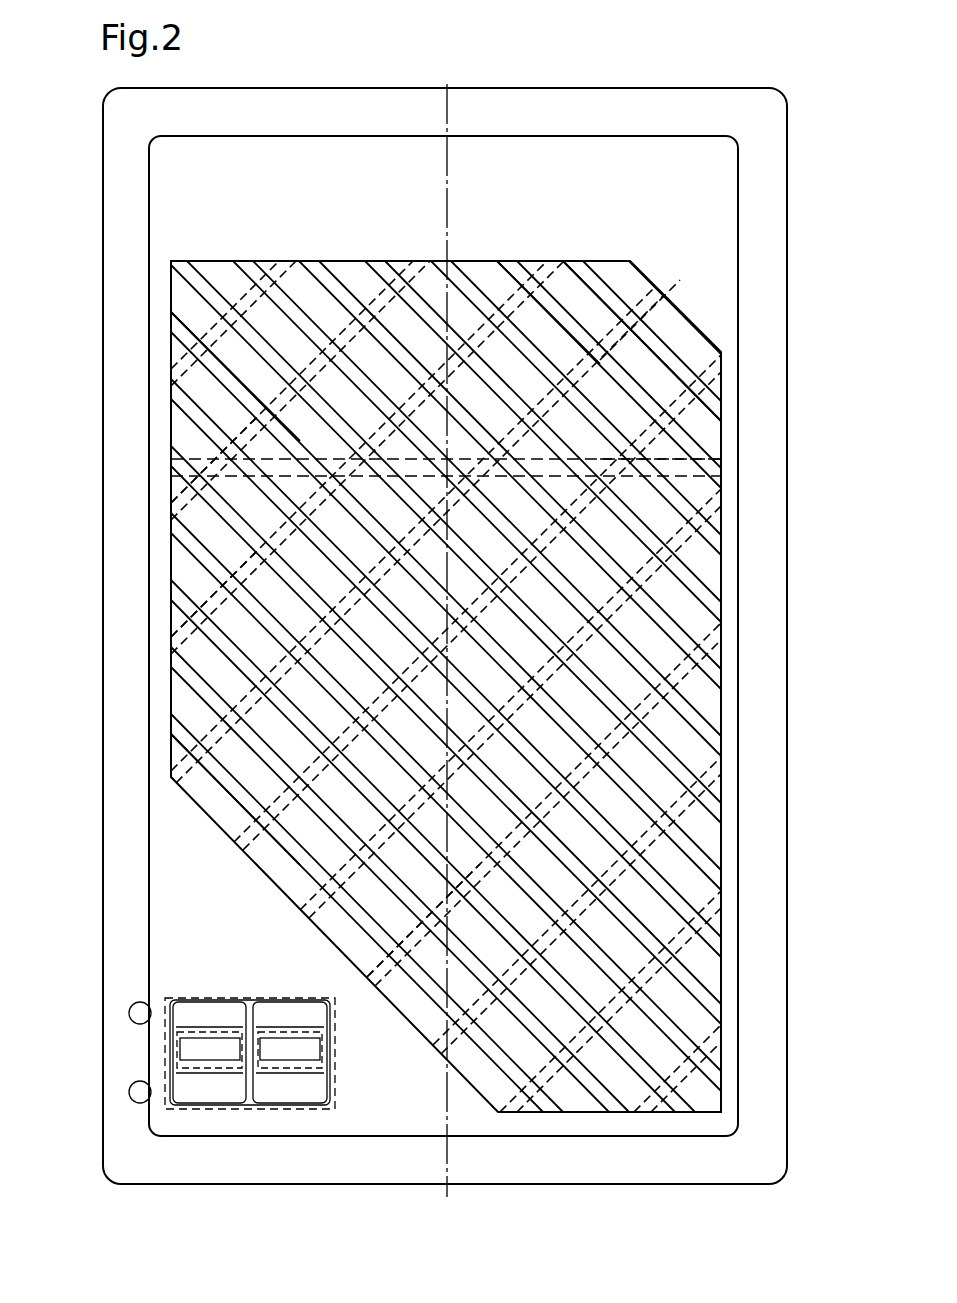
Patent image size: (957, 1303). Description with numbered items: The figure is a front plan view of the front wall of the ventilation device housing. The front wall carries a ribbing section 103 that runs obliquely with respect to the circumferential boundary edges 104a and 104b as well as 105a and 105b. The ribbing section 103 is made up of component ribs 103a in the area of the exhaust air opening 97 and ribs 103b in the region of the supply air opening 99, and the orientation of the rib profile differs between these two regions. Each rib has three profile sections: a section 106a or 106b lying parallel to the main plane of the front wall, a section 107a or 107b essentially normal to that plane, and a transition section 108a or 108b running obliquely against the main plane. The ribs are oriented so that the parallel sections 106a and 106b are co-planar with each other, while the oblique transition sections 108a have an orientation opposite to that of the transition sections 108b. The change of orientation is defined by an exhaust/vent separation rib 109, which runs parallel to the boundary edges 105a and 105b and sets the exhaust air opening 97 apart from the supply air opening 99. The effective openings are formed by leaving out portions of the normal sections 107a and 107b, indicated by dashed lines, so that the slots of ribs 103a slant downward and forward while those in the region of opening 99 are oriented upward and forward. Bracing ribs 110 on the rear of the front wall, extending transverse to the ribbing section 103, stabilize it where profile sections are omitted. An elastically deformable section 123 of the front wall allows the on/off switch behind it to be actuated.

The exhaust air opening 97 is at (500, 622).
The supply air opening 99 is at (388, 372).
The ribbing section 103 is at (207, 498).
The ribs in the exhaust air opening region 103a is at (268, 778).
The ribs in the supply air opening region 103b is at (550, 334).
The circumferential boundary edge 104a is at (100, 270).
The circumferential boundary edge 104b is at (787, 790).
The boundary edge 105a is at (490, 89).
The boundary edge 105b is at (320, 1185).
The profile section parallel to the main plane 106a is at (177, 595).
The profile section parallel to the main plane 106b is at (188, 408).
The profile section normal to the main plane 107a is at (665, 1028).
The profile section normal to the main plane 107b is at (655, 338).
The transition section 108a is at (183, 687).
The transition section 108b is at (183, 440).
The exhaust/vent separation rib 109 is at (700, 462).
The bracing ribs 110 is at (678, 413).
The elastically deformable section 123 is at (282, 1090).